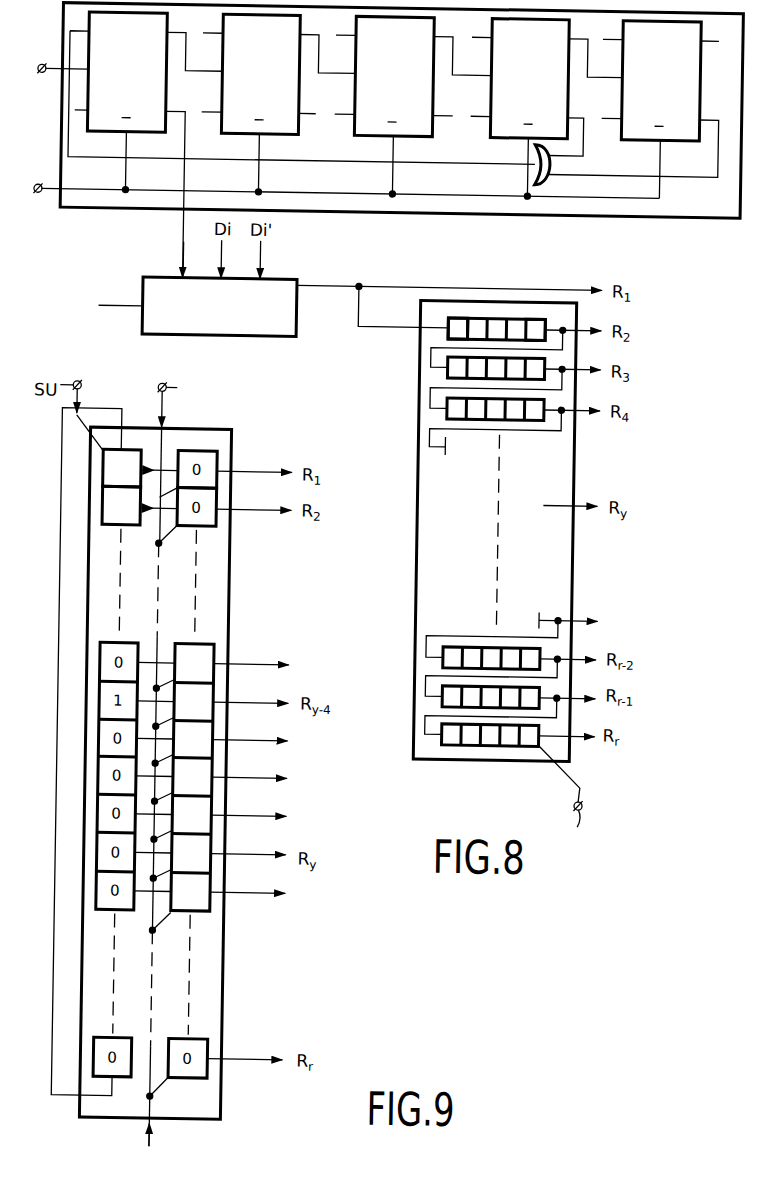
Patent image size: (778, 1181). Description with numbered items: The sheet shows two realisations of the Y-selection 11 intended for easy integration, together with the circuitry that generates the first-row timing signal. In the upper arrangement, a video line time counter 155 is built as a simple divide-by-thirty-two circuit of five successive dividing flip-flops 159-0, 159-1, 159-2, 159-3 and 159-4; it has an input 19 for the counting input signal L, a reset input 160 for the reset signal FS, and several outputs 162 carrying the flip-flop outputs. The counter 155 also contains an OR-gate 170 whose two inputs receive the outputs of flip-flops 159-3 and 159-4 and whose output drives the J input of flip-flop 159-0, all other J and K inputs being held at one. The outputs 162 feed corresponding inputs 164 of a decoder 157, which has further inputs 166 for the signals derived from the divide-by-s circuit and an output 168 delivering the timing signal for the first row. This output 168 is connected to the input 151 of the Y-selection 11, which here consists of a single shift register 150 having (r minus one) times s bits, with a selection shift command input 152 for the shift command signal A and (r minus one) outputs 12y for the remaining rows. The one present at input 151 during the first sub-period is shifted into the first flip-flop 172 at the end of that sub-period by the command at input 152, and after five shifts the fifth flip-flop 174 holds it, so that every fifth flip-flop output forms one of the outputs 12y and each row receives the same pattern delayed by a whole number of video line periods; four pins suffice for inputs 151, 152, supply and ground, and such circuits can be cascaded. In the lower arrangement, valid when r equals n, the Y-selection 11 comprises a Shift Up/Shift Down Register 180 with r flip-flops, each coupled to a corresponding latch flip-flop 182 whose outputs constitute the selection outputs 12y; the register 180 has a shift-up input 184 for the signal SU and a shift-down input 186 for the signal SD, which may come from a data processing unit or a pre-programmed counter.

In FIG. 8, the video line time counter 155 is at (424, 214).
In FIG. 8, the dividing flip-flop 159-0 is at (158, 94).
In FIG. 8, the dividing flip-flop 159-1 is at (273, 134).
In FIG. 8, the dividing flip-flop 159-2 is at (398, 137).
In FIG. 8, the dividing flip-flop 159-3 is at (560, 103).
In FIG. 8, the dividing flip-flop 159-4 is at (676, 138).
In FIG. 8, the OR-gate 170 is at (528, 170).
In FIG. 8, the input 19 is at (36, 67).
In FIG. 8, the reset input 160 is at (52, 203).
In FIG. 8, the outputs 162 is at (176, 224).
In FIG. 8, the decoder 157 is at (234, 340).
In FIG. 8, the inputs 164 is at (173, 276).
In FIG. 8, the inputs 166 is at (138, 316).
In FIG. 8, the output 168 is at (296, 283).
In FIG. 8, the input 151 is at (411, 330).
In FIG. 8, the Y-selection 11 is at (416, 457).
In FIG. 9, the Y-selection 11 is at (229, 981).
In FIG. 8, the shift register 150 is at (512, 420).
In FIG. 8, the first flip-flop 172 is at (457, 317).
In FIG. 8, the fifth flip-flop 174 is at (530, 317).
In FIG. 8, the outputs 12y is at (575, 506).
In FIG. 9, the outputs 12y is at (229, 860).
In FIG. 8, the selection shift command input 152 is at (563, 760).
In FIG. 9, the selection shift command input 152 is at (168, 1129).
In FIG. 9, the shift-up input 184 is at (101, 455).
In FIG. 9, the Shift Up/Shift Down Register 180 is at (101, 514).
In FIG. 9, the shift-down input 186 is at (147, 457).
In FIG. 9, the latch flip-flop 182 is at (216, 653).